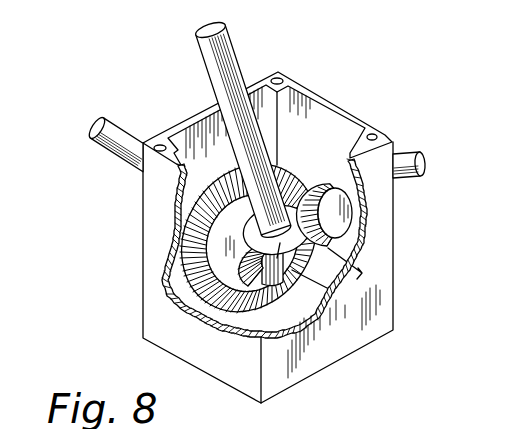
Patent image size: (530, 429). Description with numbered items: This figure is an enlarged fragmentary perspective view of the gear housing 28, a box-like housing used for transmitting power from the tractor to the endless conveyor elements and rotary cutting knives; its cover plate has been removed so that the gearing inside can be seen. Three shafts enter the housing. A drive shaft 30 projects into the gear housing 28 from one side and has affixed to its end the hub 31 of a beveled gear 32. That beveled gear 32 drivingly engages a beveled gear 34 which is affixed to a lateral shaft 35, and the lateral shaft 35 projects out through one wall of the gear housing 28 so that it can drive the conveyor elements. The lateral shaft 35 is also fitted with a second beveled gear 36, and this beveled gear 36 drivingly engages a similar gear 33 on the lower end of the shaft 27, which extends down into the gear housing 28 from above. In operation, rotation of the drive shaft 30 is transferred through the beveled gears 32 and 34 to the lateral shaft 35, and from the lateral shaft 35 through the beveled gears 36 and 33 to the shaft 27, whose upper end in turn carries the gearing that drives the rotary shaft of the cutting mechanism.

The shaft 27 is at (221, 60).
The gear housing 28 is at (382, 277).
The drive shaft 30 is at (407, 153).
The hub 31 is at (345, 217).
The beveled gear 32 is at (362, 273).
The gear 33 is at (268, 275).
The beveled gear 34 is at (208, 237).
The lateral shaft 35 is at (118, 146).
The beveled gear 36 is at (242, 262).